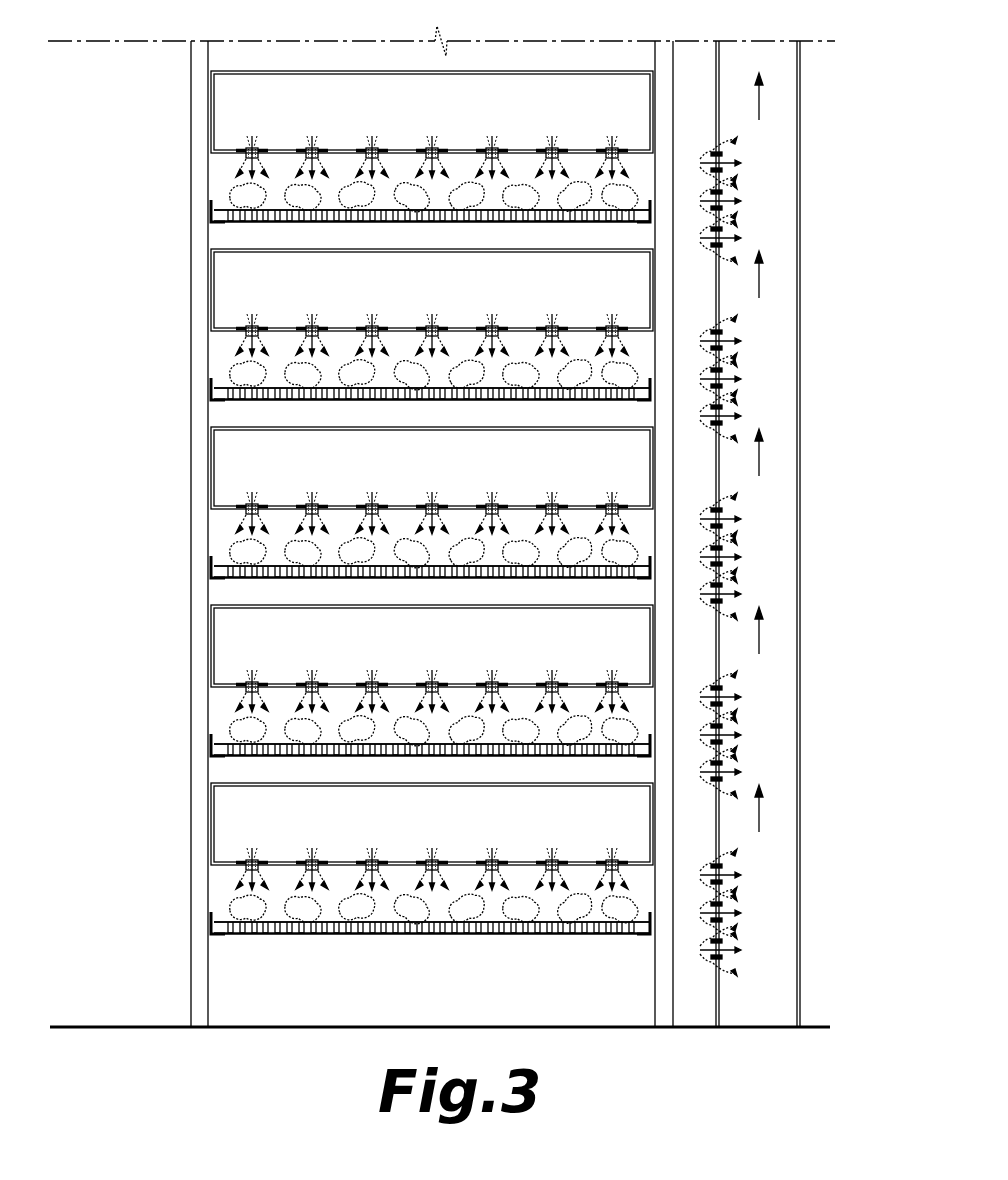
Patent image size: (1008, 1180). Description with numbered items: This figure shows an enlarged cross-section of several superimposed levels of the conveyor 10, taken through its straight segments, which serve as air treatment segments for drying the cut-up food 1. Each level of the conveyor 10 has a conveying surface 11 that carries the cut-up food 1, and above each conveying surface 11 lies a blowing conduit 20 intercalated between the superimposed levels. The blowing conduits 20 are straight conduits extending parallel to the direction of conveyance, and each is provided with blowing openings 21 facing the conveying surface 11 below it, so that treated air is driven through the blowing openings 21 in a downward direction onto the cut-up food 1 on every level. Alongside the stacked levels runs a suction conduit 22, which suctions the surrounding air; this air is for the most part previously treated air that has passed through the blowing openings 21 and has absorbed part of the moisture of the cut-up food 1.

The cut-up food 1 is at (393, 570).
The conveyor 10 is at (390, 568).
The conveying surfaces 11 is at (390, 542).
The blowing conduits 20 is at (391, 468).
The blowing openings 21 is at (432, 487).
The suction conduits 22 is at (800, 283).